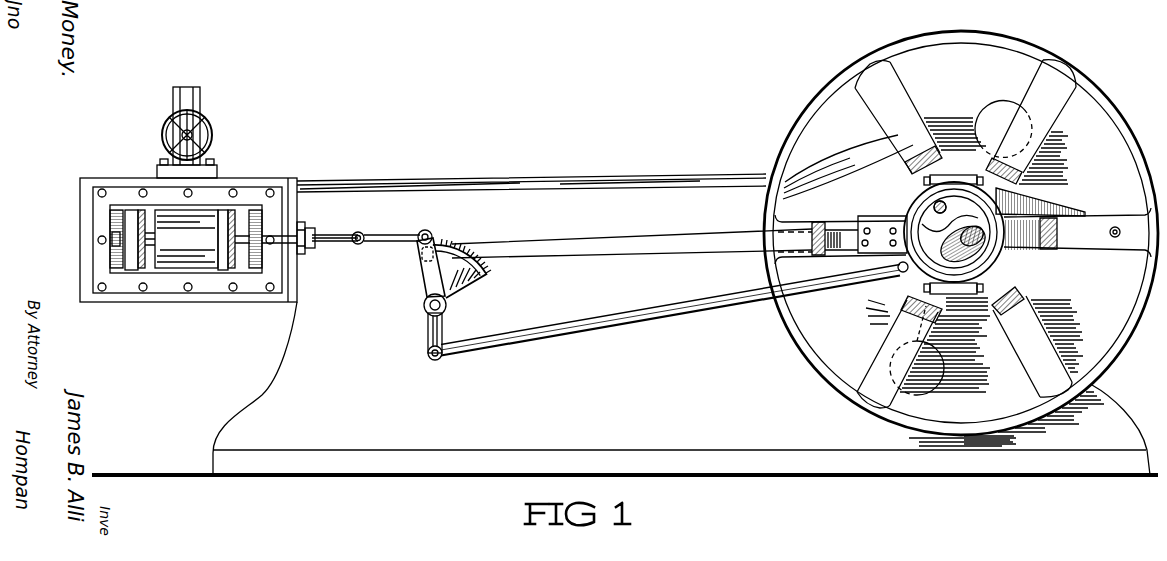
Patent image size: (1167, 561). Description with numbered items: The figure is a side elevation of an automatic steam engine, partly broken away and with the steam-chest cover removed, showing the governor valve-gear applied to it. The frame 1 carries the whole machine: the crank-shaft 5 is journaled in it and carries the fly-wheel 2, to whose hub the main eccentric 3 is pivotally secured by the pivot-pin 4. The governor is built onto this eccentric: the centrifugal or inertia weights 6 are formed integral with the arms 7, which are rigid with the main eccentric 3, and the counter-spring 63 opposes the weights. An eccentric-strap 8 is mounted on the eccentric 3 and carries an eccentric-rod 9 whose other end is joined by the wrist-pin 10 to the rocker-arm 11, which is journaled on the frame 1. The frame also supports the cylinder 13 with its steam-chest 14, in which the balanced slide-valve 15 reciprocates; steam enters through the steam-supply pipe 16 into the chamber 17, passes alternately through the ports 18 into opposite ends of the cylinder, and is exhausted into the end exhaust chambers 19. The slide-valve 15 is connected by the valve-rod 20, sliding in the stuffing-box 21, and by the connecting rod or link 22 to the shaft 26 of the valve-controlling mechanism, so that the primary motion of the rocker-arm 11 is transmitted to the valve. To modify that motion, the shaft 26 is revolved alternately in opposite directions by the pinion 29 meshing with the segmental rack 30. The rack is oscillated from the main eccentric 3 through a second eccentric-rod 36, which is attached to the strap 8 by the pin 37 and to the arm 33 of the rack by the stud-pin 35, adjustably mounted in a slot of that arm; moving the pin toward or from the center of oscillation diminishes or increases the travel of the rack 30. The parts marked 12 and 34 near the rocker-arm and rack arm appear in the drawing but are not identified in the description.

The frame 1 is at (275, 392).
The fly-wheel 2 is at (822, 72).
The main eccentric 3 is at (954, 232).
The pivot-pin 4 is at (932, 205).
The crank-shaft 5 is at (985, 242).
The centrifugal or inertia weights 6 is at (961, 248).
The arms 7 is at (983, 153).
The eccentric-strap 8 is at (920, 285).
The eccentric-rod 9 is at (693, 249).
The wrist-pin 10 is at (420, 254).
The rocker-arm 11 is at (428, 276).
The pivot 12 is at (430, 306).
The cylinder 13 is at (83, 206).
The steam-chest 14 is at (100, 222).
The slide-valve 15 is at (130, 218).
The steam-supply pipe 16 is at (200, 103).
The chamber 17 is at (190, 218).
The ports 18 is at (141, 210).
The exhaust chambers 19 is at (118, 268).
The valve-rod 20 is at (277, 226).
The stuffing-box 21 is at (302, 228).
The connecting rod or link 22 is at (392, 235).
The shaft 26 is at (433, 239).
The pinion 29 is at (430, 232).
The segmental rack 30 is at (489, 272).
The arm 33 is at (417, 333).
The arm 34 is at (443, 330).
The stud-pin 35 is at (441, 357).
The eccentric-rod 36 is at (670, 310).
The pin 37 is at (899, 270).
The counter-spring 63 is at (1045, 205).